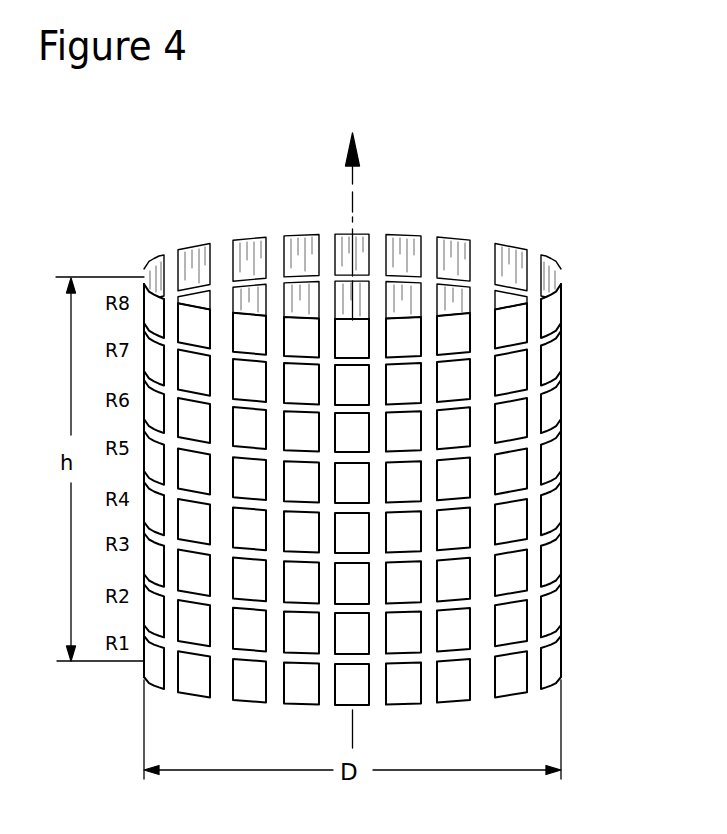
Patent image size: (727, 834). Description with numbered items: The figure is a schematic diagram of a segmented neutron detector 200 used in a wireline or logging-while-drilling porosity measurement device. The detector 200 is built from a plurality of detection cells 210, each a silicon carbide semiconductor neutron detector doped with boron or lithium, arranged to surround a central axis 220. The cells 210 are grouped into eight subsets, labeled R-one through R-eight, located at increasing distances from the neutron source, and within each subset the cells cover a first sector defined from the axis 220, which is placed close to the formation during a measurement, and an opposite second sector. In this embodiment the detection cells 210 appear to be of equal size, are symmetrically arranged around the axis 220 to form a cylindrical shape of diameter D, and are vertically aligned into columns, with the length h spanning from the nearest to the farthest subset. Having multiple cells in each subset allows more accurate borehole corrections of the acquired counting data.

The segmented neutron detector 200 is at (156, 199).
The detection cell 210 is at (554, 446).
The central axis 220 is at (353, 192).